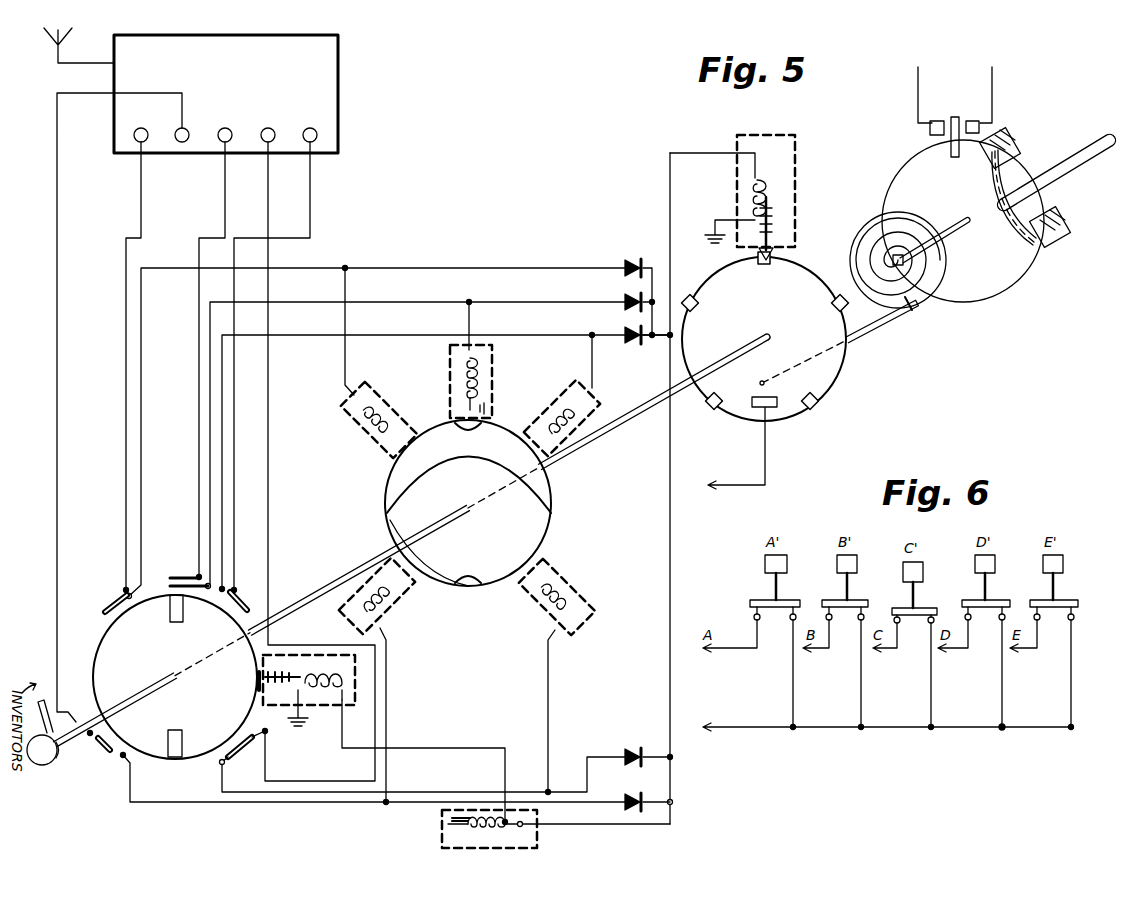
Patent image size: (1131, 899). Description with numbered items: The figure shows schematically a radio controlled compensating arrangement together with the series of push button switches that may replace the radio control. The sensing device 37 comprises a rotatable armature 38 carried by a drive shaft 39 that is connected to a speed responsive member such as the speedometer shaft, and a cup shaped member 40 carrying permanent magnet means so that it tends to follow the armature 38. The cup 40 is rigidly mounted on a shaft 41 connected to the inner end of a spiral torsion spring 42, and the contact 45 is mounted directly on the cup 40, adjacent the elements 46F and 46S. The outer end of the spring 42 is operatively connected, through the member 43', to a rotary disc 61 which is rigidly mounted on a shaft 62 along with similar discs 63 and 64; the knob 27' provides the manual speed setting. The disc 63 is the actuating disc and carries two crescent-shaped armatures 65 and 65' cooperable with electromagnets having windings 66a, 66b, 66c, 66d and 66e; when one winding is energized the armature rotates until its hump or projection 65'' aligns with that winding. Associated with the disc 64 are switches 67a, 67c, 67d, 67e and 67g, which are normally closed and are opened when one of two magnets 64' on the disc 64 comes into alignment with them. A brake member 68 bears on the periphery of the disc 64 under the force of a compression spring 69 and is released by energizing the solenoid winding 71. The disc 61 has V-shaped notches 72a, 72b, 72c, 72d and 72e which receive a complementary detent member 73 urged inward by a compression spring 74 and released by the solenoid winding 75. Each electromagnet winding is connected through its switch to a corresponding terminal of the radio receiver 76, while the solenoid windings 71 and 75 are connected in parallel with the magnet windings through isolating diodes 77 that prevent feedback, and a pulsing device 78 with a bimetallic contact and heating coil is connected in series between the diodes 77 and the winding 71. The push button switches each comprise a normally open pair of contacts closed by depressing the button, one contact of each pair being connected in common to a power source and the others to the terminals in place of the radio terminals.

The radio receiver 76 is at (338, 66).
The isolating diodes 77 is at (624, 300).
The pulsing device 78 is at (434, 830).
The knob 27' is at (36, 744).
The shaft 62 is at (650, 385).
The shaft extension 43' is at (839, 341).
The disc 64 is at (175, 692).
The magnets 64' is at (165, 676).
The switch 67a is at (106, 600).
The switch 67c is at (182, 575).
The switch 67d is at (105, 758).
The switch 67e is at (252, 603).
The contact 67g is at (244, 757).
The brake member 68 is at (257, 683).
The compression spring 69 is at (276, 670).
The solenoid winding 71 is at (320, 690).
The actuating disc 63 is at (530, 507).
The crescent-shaped armature 65 is at (505, 409).
The crescent-shaped armature 65' is at (493, 595).
The hump or projection 65'' is at (453, 531).
The electromagnet winding 66a is at (388, 400).
The electromagnet winding 66b is at (575, 585).
The electromagnet winding 66c is at (485, 375).
The electromagnet winding 66d is at (395, 605).
The electromagnet winding 66e is at (592, 412).
The rotary disc 61 is at (835, 378).
The V-shaped notch 72a is at (690, 300).
The V-shaped notch 72b is at (810, 405).
The V-shaped notch 72c is at (758, 262).
The V-shaped notch 72d is at (718, 405).
The V-shaped notch 72e is at (843, 300).
The solenoid winding 75 is at (750, 205).
The compression spring 74 is at (774, 228).
The detent member 73 is at (778, 255).
The spiral torsion spring 42 is at (880, 232).
The shaft 41 is at (972, 232).
The cup shaped member 40 is at (985, 290).
The contact 45 is at (945, 140).
The fast switch 46F is at (937, 121).
The slow switch 46S is at (972, 121).
The drive shaft 39 is at (1080, 170).
The rotatable armature 38 is at (1018, 150).
The sensing device 37 is at (1024, 304).